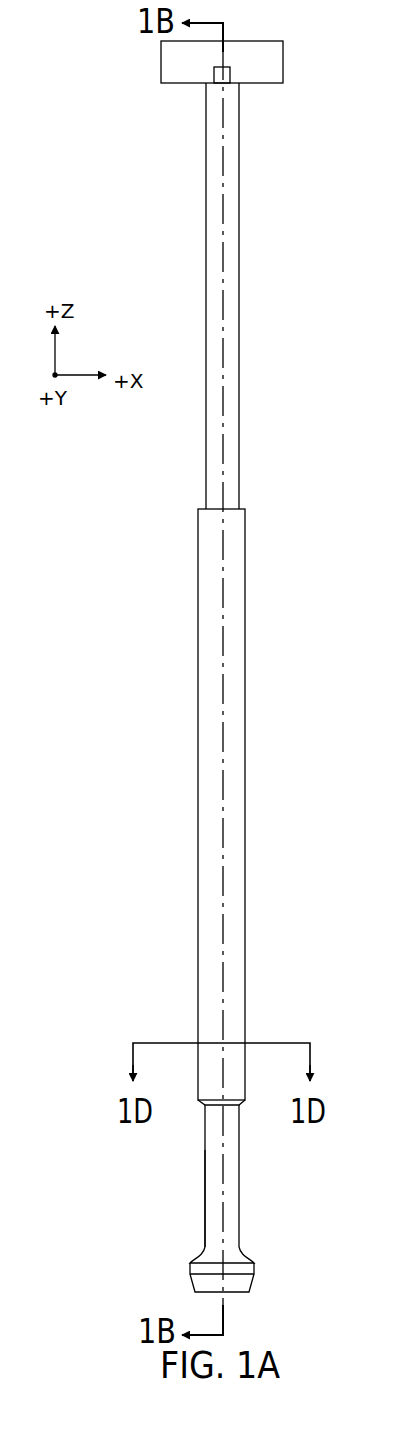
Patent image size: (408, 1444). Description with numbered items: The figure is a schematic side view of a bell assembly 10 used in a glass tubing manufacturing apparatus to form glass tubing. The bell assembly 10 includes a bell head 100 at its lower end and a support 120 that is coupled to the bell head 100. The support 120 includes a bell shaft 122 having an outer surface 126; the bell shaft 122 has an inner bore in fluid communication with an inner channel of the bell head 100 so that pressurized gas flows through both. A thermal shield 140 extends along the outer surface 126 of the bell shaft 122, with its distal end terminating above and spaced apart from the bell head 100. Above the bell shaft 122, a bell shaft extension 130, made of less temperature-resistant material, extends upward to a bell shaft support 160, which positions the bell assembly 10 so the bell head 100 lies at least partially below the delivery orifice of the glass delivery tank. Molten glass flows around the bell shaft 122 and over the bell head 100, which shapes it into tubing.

The bell assembly 10 is at (125, 196).
The bell head 100 is at (186, 1267).
The support 120 is at (168, 636).
The bell shaft 122 is at (239, 1193).
The outer surface 126 is at (204, 1190).
The bell shaft extension 130 is at (242, 197).
The thermal shield 140 is at (245, 610).
The bell shaft support 160 is at (283, 64).